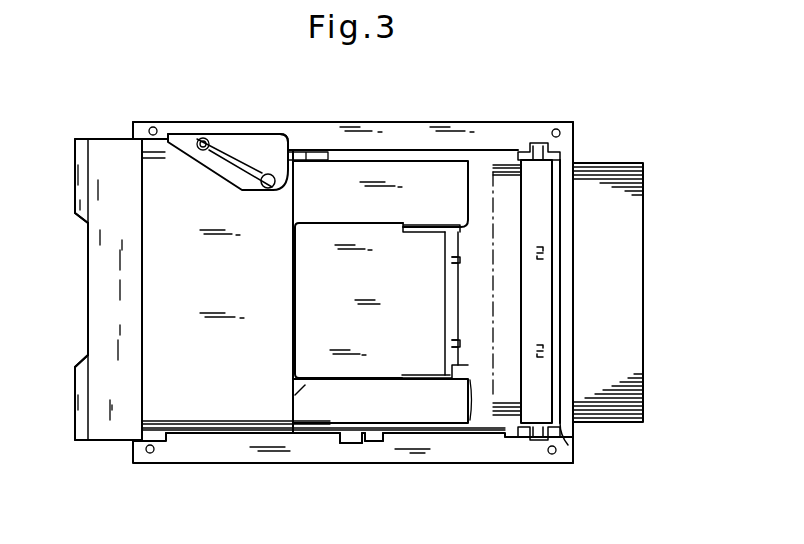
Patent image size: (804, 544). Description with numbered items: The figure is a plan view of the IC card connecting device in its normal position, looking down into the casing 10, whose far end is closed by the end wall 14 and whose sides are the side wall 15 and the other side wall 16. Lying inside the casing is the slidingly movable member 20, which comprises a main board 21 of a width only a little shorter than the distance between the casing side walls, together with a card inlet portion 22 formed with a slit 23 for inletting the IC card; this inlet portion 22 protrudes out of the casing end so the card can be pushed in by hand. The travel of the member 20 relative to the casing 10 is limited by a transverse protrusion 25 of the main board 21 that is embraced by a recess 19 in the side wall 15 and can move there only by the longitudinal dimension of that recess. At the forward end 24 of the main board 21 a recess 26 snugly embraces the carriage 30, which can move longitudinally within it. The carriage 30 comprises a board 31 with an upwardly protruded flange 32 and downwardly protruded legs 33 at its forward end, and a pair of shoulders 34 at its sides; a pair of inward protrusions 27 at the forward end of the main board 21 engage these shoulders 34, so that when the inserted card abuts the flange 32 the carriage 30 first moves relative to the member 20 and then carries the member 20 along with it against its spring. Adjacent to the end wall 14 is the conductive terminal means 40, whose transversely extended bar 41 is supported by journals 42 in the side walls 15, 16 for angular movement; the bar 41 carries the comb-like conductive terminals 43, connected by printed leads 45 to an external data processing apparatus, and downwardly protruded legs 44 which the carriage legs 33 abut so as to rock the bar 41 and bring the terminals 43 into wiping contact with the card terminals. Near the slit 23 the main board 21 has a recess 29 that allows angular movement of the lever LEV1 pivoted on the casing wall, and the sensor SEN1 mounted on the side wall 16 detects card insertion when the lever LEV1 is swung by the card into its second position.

The casing 10 is at (309, 121).
The end wall 14 is at (565, 415).
The side wall 15 is at (409, 455).
The side wall 16 is at (461, 133).
The recess 19 is at (369, 443).
The slidingly movable member 20 is at (107, 442).
The main board 21 is at (186, 412).
The card inlet portion 22 is at (108, 143).
The slit 23 is at (88, 319).
The forward end 24 is at (474, 170).
The transverse protrusion 25 is at (350, 445).
The recess 26 is at (298, 283).
The inward protrusion 27 is at (470, 232).
The recess 29 is at (238, 186).
The carriage 30 is at (305, 385).
The carriage board 31 is at (343, 368).
The upwardly protruded flange 32 is at (446, 292).
The downwardly protruded leg 33 is at (459, 256).
The shoulder 34 is at (400, 229).
The conductive terminal means 40 is at (554, 210).
The transverse bar 41 is at (570, 195).
The journal 42 is at (548, 150).
The conductive terminal 43 is at (513, 160).
The downwardly protruded leg 44 is at (545, 252).
The lead 45 is at (642, 180).
The lever LEV1 is at (219, 159).
The sensor SEN1 is at (273, 140).